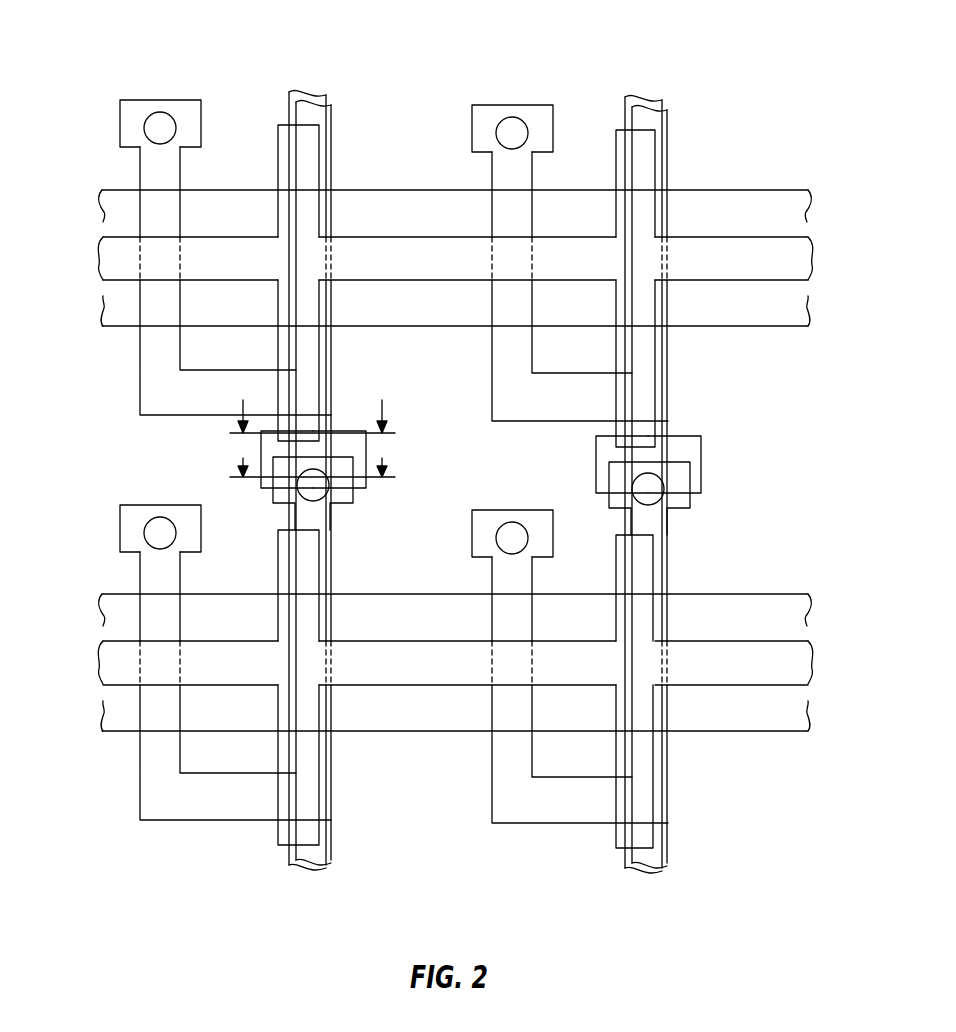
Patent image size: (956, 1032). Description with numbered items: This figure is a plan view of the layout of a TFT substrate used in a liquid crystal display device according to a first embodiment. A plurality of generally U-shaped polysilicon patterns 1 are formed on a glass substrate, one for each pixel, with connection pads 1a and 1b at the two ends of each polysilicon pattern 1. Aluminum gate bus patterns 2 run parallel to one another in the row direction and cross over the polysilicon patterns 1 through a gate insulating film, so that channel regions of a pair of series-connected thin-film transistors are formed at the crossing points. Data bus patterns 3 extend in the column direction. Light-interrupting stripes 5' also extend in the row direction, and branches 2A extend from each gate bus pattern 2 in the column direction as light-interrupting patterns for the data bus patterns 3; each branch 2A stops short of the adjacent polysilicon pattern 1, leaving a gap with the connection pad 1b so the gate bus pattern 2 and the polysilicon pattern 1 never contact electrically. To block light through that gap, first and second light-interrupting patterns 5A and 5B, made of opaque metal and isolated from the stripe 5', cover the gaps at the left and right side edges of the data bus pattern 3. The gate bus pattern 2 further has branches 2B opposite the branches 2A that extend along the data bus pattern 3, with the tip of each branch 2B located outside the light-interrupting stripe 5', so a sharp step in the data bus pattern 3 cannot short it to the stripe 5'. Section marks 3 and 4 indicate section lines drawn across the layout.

The polysilicon pattern 1 is at (139, 345).
The connection pad 1a is at (137, 98).
The connection pad 1b is at (342, 507).
The gate bus pattern 2 is at (100, 257).
The branch 2A is at (320, 366).
The branch 2B is at (320, 552).
The data bus pattern 3 is at (296, 88).
The section line 4 is at (312, 457).
The light-interrupting stripe 5' is at (455, 386).
The first light-interrupting pattern 5A is at (258, 481).
The second light-interrupting pattern 5B is at (367, 483).